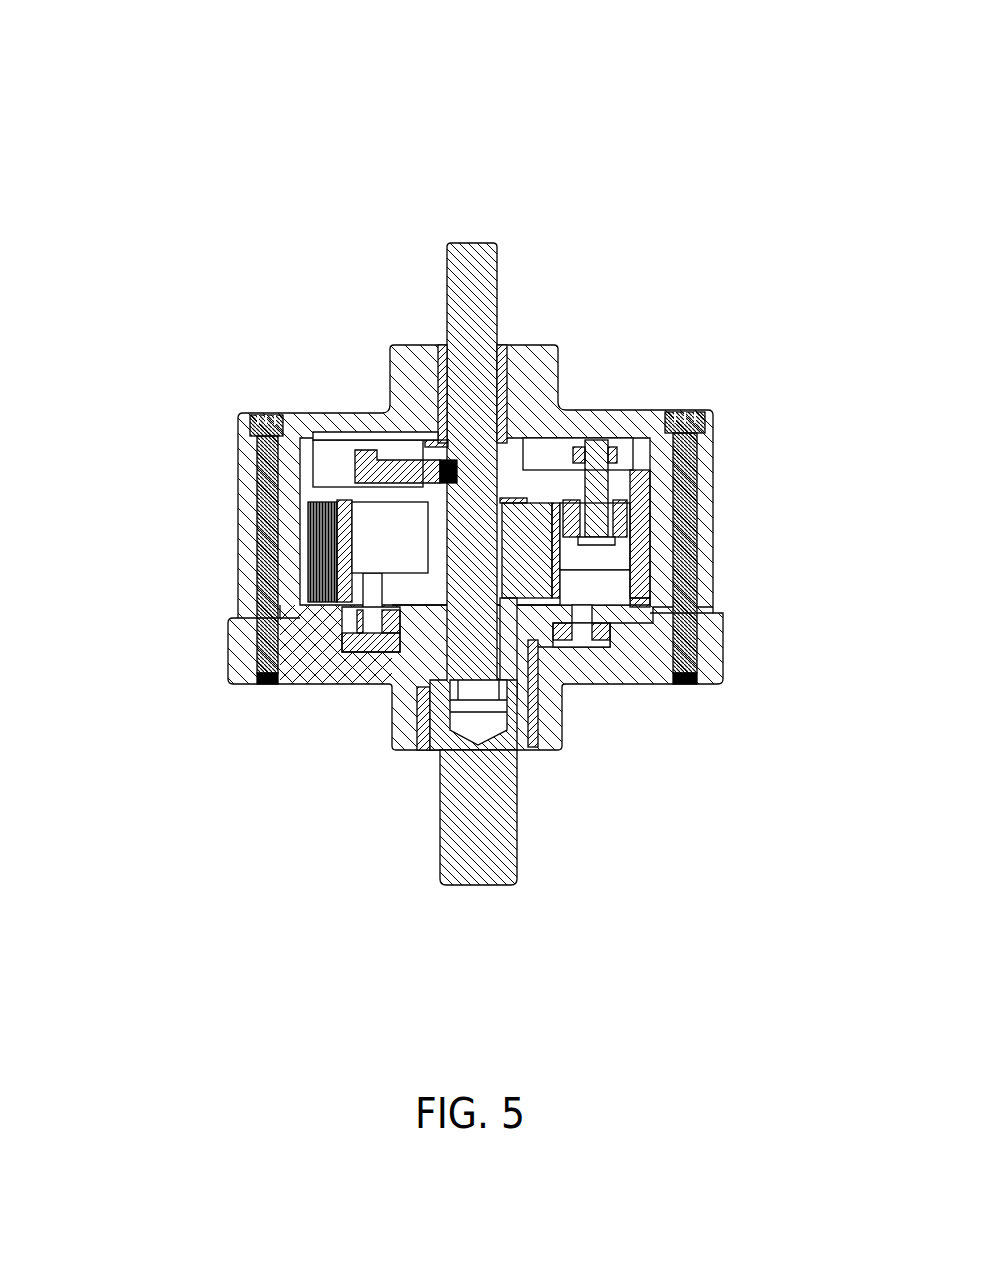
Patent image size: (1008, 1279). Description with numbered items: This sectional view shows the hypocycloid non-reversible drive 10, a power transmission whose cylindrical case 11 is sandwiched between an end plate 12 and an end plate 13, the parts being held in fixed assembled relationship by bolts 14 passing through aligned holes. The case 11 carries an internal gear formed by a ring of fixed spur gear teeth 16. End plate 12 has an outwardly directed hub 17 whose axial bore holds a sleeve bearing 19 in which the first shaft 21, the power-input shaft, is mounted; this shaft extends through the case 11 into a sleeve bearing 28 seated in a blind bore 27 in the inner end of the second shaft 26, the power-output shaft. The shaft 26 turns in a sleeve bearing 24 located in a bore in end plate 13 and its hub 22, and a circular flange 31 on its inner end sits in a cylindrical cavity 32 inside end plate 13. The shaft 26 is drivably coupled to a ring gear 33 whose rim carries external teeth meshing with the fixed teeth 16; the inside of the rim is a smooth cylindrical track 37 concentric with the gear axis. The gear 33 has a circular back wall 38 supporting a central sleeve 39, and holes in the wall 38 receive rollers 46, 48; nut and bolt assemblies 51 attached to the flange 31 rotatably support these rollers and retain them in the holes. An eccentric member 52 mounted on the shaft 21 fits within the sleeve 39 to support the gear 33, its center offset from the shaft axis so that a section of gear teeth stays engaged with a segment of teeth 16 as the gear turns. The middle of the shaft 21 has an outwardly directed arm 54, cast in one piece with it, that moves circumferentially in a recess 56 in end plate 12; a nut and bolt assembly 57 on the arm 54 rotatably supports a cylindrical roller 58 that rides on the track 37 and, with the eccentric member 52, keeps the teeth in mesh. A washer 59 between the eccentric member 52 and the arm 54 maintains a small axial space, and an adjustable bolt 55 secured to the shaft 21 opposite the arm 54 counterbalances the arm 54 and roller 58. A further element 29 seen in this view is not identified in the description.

The hypocycloid non-reversible drive 10 is at (352, 82).
The case 11 is at (722, 455).
The end plate 12 is at (700, 445).
The end plate 13 is at (347, 621).
The bolts 14 is at (682, 432).
The fixed spur gear teeth 16 is at (335, 467).
The hub 17 is at (407, 380).
The sleeve bearing 19 is at (437, 347).
The first shaft 21 is at (467, 278).
The hub 22 is at (400, 720).
The sleeve bearing 24 is at (408, 750).
The second shaft 26 is at (517, 878).
The blind bore 27 is at (490, 827).
The sleeve bearing 28 is at (540, 715).
The seal 29 is at (512, 752).
The circular flange 31 is at (575, 685).
The cylindrical cavity 32 is at (310, 685).
The ring gear 33 is at (230, 622).
The cylindrical surface 37 is at (530, 552).
The circular back wall 38 is at (387, 643).
The sleeve 39 is at (230, 686).
The roller 46 is at (278, 685).
The roller 48 is at (660, 682).
The nut and bolt assemblies 51 is at (635, 685).
The eccentric member 52 is at (657, 604).
The arm 54 is at (561, 470).
The adjustable bolt 55 is at (387, 413).
The recess 56 is at (287, 413).
The nut and bolt assembly 57 is at (607, 480).
The cylindrical roller 58 is at (645, 490).
The washer 59 is at (343, 552).